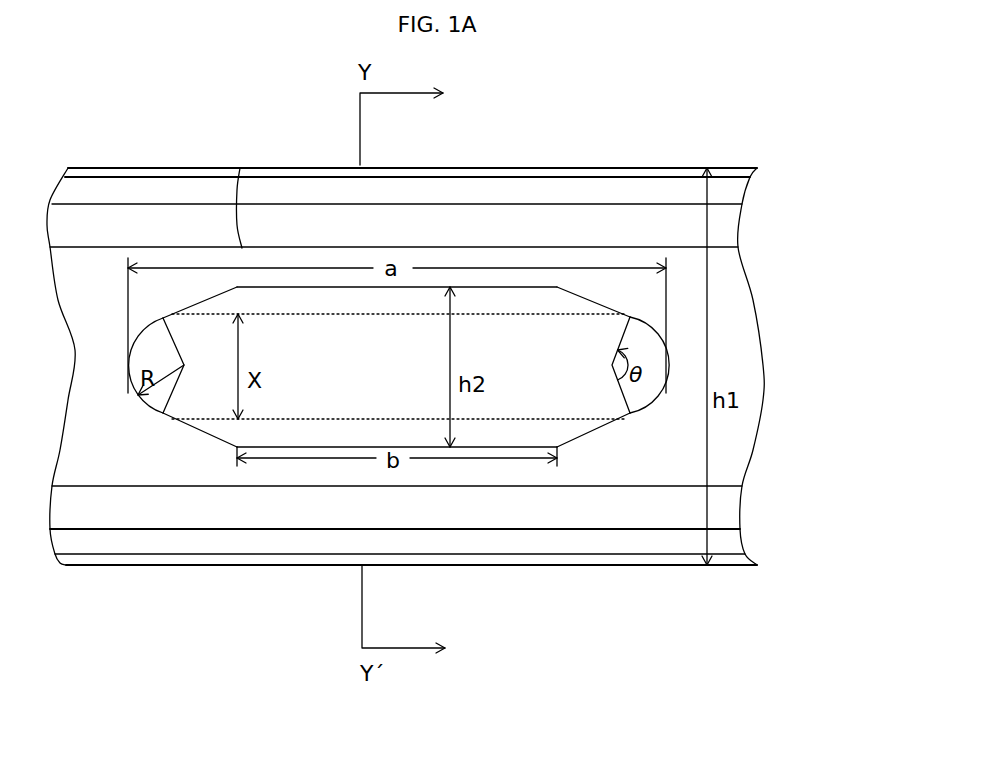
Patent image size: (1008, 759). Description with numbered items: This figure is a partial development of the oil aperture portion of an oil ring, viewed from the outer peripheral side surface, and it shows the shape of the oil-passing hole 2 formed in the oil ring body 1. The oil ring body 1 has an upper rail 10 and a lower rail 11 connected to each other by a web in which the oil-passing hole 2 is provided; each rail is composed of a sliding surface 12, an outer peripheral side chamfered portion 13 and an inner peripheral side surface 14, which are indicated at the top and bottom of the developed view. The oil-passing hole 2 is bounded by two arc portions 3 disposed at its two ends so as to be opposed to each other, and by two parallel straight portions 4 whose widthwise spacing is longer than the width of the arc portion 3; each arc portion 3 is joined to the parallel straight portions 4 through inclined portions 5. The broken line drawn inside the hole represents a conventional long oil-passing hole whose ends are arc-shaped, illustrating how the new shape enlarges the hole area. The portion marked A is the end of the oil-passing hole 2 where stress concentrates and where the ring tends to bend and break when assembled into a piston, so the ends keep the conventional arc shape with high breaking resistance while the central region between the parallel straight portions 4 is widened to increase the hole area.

The oil ring body 1 is at (612, 487).
The oil-passing hole 2 is at (333, 390).
The arc portion 3 is at (143, 405).
The parallel straight portion 4 is at (503, 285).
The inclined portion 5 is at (190, 427).
The upper rail 10 is at (235, 205).
The lower rail 11 is at (508, 486).
The sliding surface 12 is at (742, 203).
The outer peripheral side chamfered portion 13 is at (753, 175).
The inner peripheral side surface 14 is at (738, 230).
The end portion of the oil-passing hole A is at (667, 367).